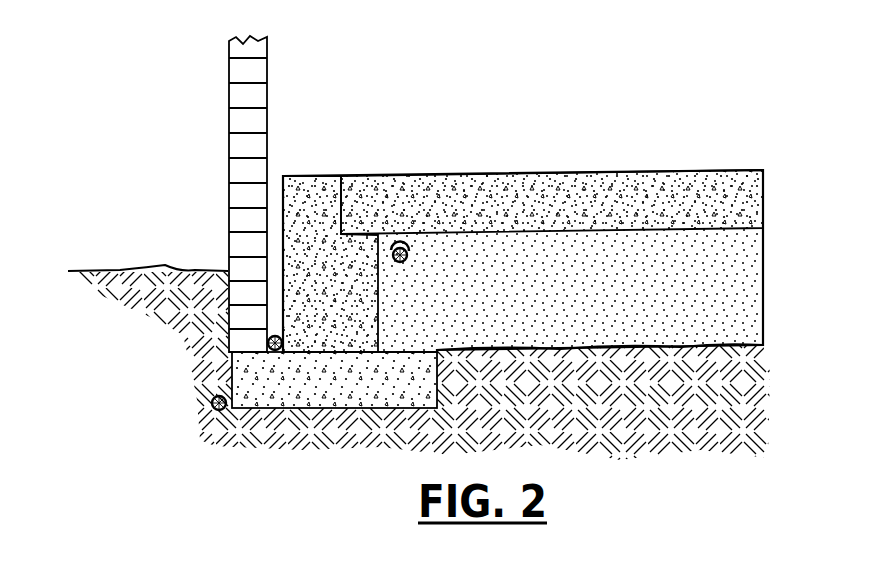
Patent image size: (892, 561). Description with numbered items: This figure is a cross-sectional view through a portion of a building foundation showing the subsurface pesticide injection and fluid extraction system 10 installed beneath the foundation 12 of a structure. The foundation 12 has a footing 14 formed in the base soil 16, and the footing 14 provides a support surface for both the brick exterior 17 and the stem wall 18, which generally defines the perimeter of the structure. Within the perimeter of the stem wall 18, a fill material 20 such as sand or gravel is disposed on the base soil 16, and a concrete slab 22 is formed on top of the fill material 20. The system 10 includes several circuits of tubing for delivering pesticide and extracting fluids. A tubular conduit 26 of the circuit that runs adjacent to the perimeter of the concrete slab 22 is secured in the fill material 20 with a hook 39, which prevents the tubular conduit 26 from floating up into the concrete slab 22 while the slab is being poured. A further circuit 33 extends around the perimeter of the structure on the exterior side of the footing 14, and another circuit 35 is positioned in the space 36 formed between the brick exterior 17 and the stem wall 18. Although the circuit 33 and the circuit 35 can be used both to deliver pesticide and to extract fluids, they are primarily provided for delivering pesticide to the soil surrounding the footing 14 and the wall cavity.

The subsurface pesticide injection and fluid extraction system 10 is at (375, 122).
The foundation 12 is at (523, 212).
The footing 14 is at (277, 410).
The base soil 16 is at (103, 270).
The brick exterior 17 is at (228, 146).
The stem wall 18 is at (310, 176).
The fill material 20 is at (612, 263).
The concrete slab 22 is at (684, 170).
The tubular conduit 26 is at (400, 248).
The circuit 33 is at (212, 400).
The circuit 35 is at (268, 337).
The space 36 is at (272, 335).
The hook 39 is at (392, 268).